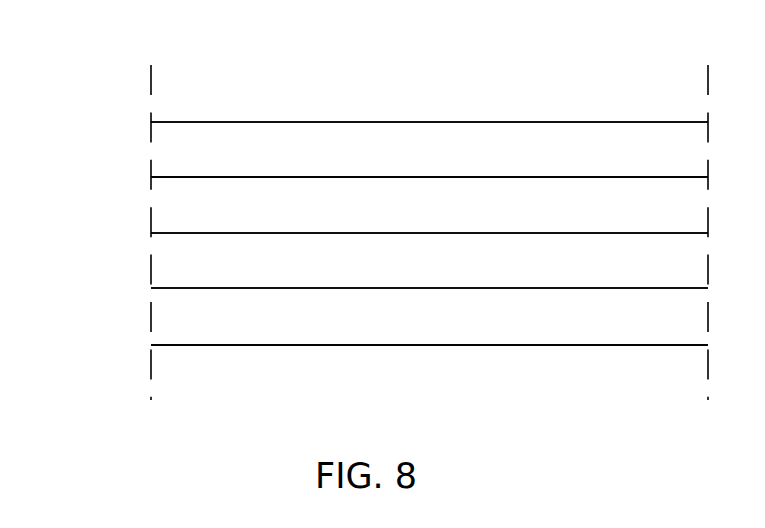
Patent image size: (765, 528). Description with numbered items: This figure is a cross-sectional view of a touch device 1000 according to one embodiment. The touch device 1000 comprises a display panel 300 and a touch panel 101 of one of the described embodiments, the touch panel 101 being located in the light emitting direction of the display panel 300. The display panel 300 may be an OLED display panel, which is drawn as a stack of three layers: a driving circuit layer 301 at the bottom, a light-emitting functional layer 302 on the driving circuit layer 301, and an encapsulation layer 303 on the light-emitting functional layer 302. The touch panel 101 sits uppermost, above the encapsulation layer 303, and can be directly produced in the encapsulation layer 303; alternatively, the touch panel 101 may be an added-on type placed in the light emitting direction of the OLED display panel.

The touch device 1000 is at (218, 68).
The touch panel 101 is at (213, 148).
The display panel 300 is at (83, 178).
The driving circuit layer 301 is at (213, 327).
The light-emitting functional layer 302 is at (213, 272).
The encapsulation layer 303 is at (213, 210).